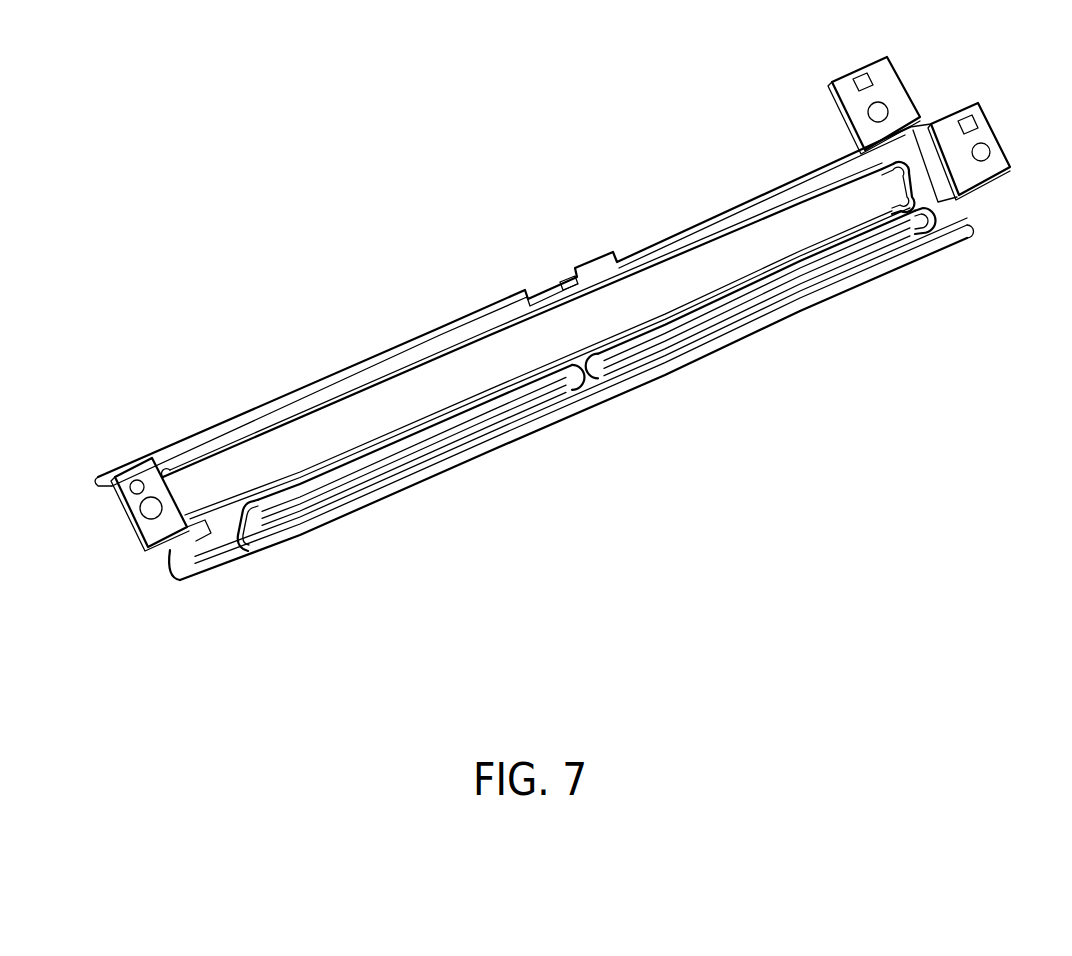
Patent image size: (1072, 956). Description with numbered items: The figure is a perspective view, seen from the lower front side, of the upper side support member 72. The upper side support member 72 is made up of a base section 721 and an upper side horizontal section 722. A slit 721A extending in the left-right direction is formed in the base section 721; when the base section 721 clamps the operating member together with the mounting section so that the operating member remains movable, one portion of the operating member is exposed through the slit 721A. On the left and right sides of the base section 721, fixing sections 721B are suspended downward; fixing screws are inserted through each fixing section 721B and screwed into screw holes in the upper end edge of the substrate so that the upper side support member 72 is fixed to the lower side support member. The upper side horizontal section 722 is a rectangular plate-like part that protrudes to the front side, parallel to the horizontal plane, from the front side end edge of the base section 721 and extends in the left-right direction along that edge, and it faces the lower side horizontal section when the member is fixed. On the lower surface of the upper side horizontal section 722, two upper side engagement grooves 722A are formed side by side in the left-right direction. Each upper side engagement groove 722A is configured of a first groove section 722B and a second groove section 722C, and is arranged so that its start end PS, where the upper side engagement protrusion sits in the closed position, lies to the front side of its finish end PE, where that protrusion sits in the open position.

The upper side support member 72 is at (300, 189).
The base section 721 is at (917, 173).
The slit 721A is at (360, 413).
The fixing section 721B is at (977, 173).
The upper side horizontal section 722 is at (215, 566).
The upper side engagement groove 722A is at (457, 524).
The first groove section 722B is at (258, 520).
The second groove section 722C is at (418, 440).
The start end PS is at (244, 545).
The finish end PE is at (921, 236).